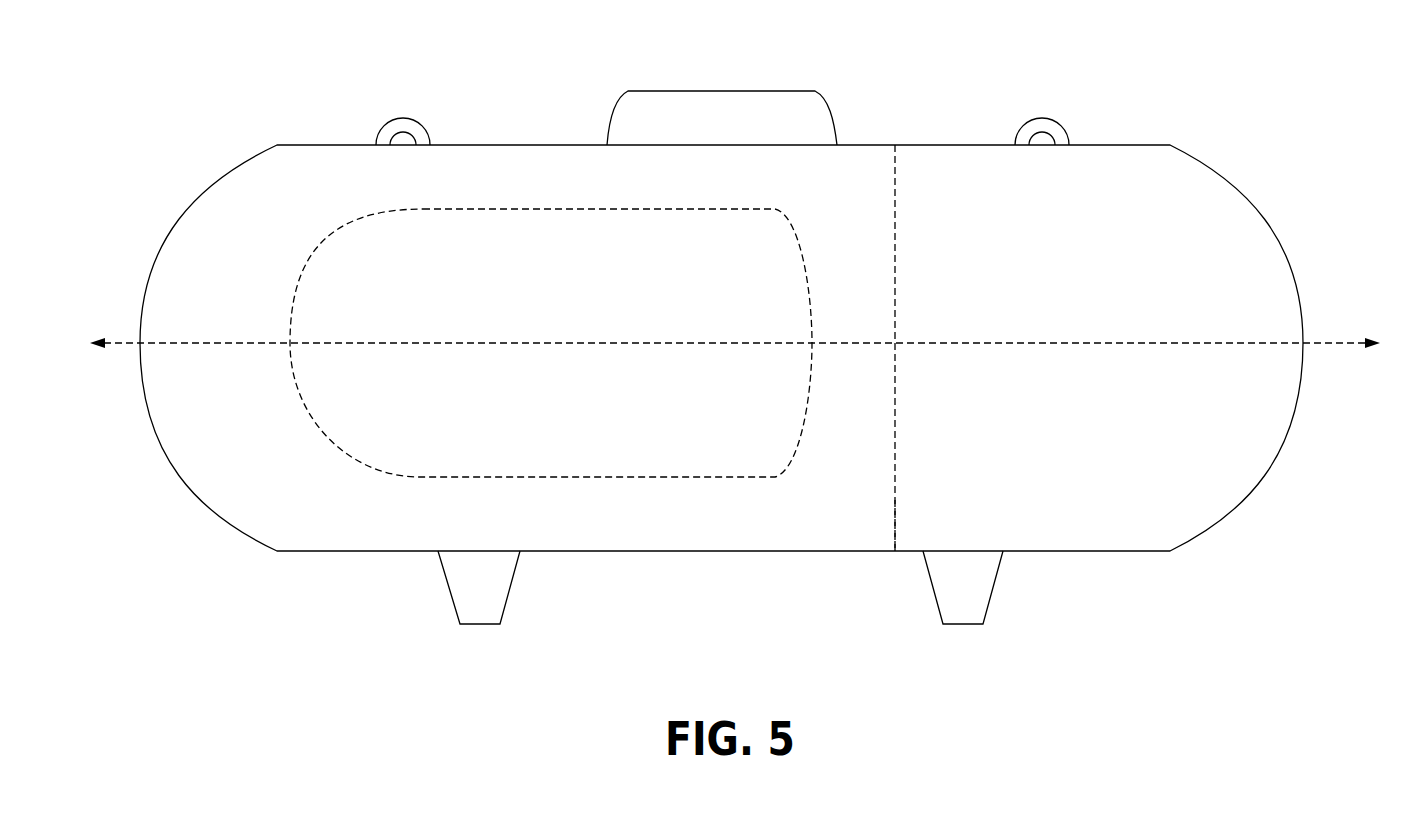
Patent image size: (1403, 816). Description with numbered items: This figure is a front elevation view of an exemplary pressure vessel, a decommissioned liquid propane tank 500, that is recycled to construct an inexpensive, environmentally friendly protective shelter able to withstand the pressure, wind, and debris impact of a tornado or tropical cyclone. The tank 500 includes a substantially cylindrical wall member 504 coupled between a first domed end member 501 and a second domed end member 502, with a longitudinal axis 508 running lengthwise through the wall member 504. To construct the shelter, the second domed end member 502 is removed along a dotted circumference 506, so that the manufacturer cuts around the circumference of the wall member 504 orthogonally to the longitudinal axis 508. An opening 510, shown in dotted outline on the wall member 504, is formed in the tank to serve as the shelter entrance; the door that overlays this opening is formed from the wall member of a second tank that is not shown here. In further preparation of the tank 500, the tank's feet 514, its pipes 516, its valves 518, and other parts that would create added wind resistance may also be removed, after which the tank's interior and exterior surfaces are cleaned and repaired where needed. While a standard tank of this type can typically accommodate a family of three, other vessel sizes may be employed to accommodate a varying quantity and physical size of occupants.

The tank 500 is at (557, 111).
The first domed end member 501 is at (200, 190).
The second domed end member 502 is at (1240, 180).
The cylindrical wall member 504 is at (862, 175).
The dotted circumference 506 is at (895, 510).
The longitudinal axis 508 is at (1335, 345).
The opening 510 is at (420, 478).
The feet 514 is at (483, 585).
The pipes 516 is at (407, 125).
The valves 518 is at (717, 112).